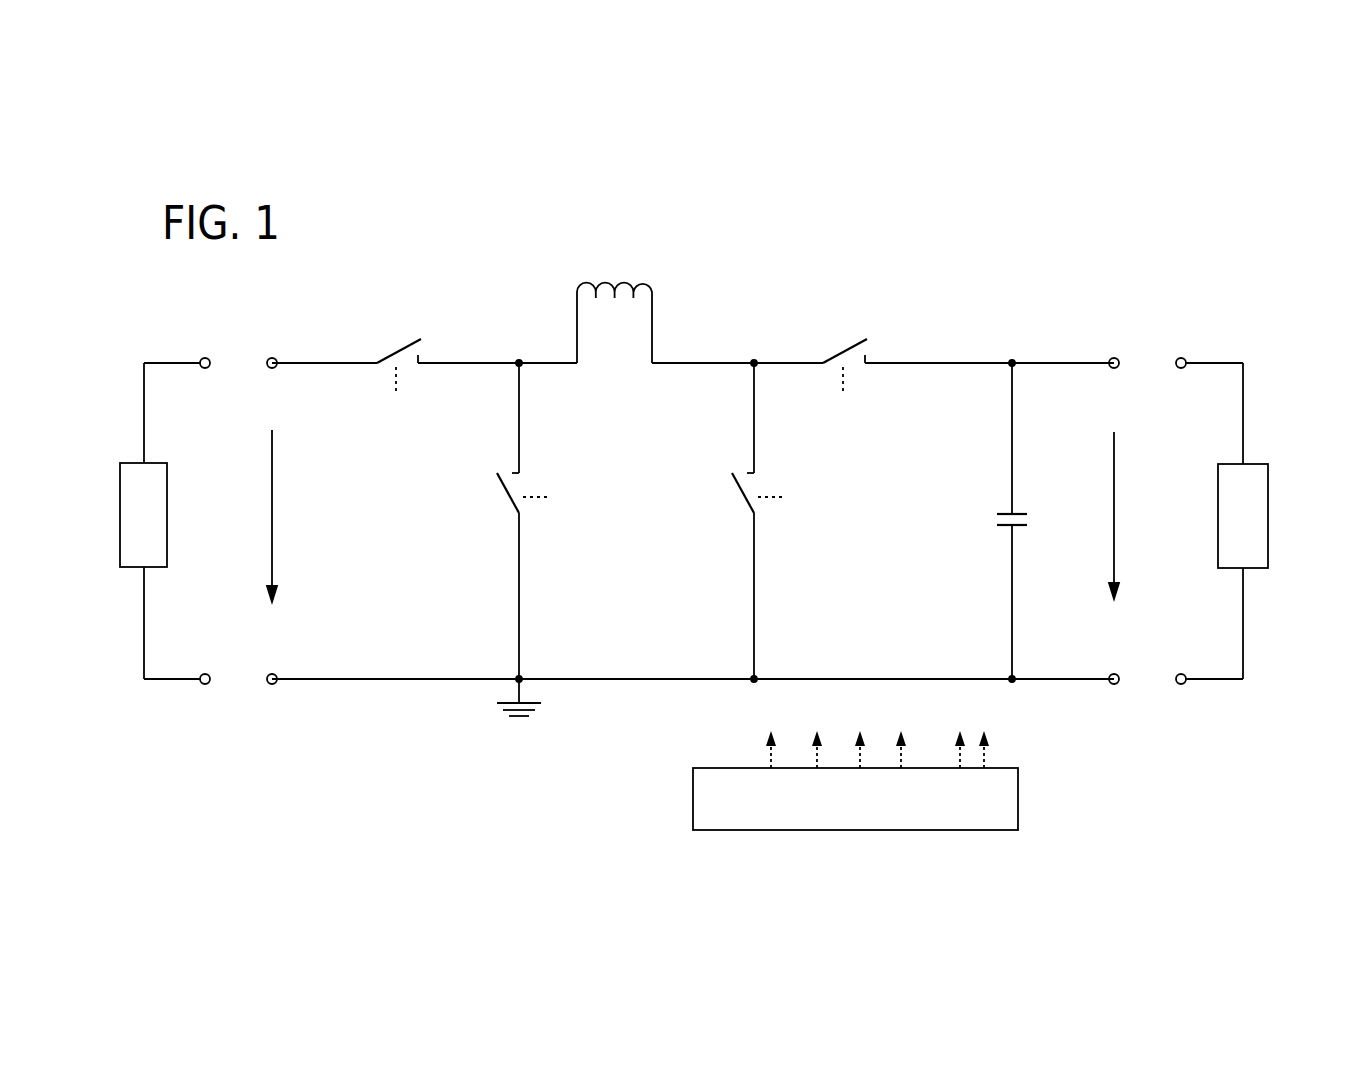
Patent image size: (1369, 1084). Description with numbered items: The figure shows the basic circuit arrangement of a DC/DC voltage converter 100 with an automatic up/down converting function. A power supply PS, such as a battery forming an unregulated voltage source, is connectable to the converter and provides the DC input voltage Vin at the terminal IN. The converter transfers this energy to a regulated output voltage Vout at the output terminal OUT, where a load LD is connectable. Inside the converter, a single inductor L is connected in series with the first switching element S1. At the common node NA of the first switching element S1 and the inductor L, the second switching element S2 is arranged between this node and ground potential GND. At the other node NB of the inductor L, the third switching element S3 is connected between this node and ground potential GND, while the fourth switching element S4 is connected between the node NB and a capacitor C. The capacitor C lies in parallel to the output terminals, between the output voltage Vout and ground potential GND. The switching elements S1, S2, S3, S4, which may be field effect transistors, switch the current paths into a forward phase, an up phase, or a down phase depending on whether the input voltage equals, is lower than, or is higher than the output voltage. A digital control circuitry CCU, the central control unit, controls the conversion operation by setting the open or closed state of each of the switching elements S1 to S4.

The voltage converter 100 is at (1030, 238).
The power supply PS is at (120, 530).
The terminal IN is at (238, 508).
The input voltage Vin is at (251, 516).
The first switching element S1 is at (399, 350).
The second switching element S2 is at (504, 521).
The third switching element S3 is at (740, 522).
The fourth switching element S4 is at (845, 350).
The common node NA is at (518, 361).
The other node of the inductor NB is at (753, 361).
The inductor L is at (614, 304).
The capacitor C is at (996, 521).
The ground potential GND is at (518, 719).
The output voltage Vout is at (1146, 515).
The output terminal OUT is at (1147, 508).
The load LD is at (1268, 472).
The digital control circuitry CCU is at (1018, 802).